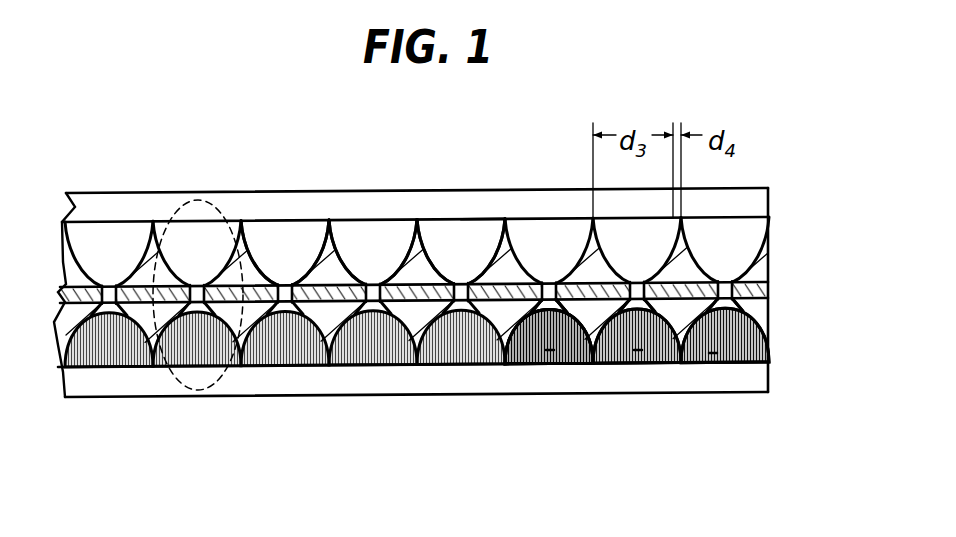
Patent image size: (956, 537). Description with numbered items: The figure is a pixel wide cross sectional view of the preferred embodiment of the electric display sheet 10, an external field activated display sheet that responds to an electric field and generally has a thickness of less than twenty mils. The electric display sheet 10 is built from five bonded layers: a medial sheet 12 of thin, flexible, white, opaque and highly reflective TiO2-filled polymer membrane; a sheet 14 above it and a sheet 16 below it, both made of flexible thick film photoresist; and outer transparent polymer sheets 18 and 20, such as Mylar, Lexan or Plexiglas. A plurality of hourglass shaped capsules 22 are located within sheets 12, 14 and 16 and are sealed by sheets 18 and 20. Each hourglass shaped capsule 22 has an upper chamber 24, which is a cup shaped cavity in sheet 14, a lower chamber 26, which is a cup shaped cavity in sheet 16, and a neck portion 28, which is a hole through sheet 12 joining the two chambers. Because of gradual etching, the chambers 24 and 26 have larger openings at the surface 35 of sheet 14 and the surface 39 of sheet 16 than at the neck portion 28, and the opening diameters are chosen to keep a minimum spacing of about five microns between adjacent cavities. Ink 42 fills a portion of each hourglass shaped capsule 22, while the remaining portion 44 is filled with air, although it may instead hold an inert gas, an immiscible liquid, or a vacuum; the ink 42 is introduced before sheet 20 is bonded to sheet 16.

The electric display sheet 10 is at (133, 150).
The sheet 18 is at (767, 203).
The sheet 14 is at (767, 240).
The chamber 24 is at (320, 257).
The remaining portion 44 is at (457, 233).
The surface 35 is at (472, 224).
The hourglass shaped capsule 22 is at (202, 199).
The sheet 12 is at (767, 287).
The neck portion 28 is at (722, 283).
The sheet 16 is at (767, 328).
The chamber 26 is at (523, 363).
The ink 42 is at (638, 348).
The surface 39 is at (713, 352).
The sheet 20 is at (767, 378).